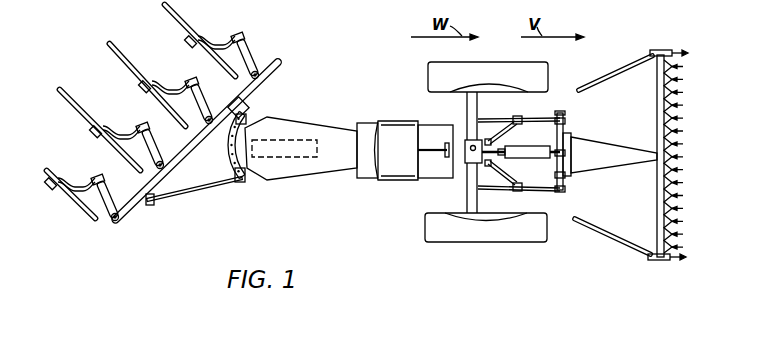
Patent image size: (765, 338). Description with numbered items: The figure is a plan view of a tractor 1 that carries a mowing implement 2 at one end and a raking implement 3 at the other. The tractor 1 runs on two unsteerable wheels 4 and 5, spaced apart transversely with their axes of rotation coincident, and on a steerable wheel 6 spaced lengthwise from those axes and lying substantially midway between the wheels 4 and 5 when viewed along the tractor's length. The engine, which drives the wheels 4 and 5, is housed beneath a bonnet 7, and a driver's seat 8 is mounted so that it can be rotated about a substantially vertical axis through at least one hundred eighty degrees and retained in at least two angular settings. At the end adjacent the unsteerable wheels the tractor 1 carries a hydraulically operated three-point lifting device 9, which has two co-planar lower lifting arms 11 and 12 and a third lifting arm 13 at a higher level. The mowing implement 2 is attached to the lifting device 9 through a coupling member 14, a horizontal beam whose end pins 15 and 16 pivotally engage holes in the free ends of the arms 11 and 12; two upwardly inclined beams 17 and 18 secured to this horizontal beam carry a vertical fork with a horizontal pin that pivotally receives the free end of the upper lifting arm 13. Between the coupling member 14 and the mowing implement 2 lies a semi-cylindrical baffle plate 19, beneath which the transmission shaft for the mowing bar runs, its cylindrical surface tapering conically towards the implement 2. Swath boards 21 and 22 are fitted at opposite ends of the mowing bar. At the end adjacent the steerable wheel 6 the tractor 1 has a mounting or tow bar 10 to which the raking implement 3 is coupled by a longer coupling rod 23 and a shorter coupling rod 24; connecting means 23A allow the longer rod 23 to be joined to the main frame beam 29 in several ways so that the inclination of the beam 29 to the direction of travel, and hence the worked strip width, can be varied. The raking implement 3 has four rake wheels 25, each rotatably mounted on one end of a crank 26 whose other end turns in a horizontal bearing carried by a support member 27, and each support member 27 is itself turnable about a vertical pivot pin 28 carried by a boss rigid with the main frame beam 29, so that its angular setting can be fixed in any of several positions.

The tractor 1 is at (428, 180).
The mowing implement 2 is at (652, 232).
The raking implement 3 is at (139, 208).
The unsteerable wheel 4 is at (527, 240).
The unsteerable wheel 5 is at (541, 75).
The steerable wheel 6 is at (288, 137).
The bonnet 7 is at (344, 172).
The driver's seat 8 is at (404, 120).
The lifting device 9 is at (524, 149).
The mounting bar or tow bar 10 is at (233, 162).
The lower lifting arm 11 is at (531, 119).
The lower lifting arm 12 is at (550, 190).
The third lifting arm 13 is at (550, 156).
The coupling member 14 is at (553, 172).
The pin 15 is at (561, 190).
The pin 16 is at (561, 116).
The upwardly inclined beam 17 is at (566, 178).
The upwardly inclined beam 18 is at (568, 133).
The semi-cylindrical baffle plate 19 is at (627, 152).
The swath board 21 is at (626, 250).
The swath board 22 is at (615, 70).
The longer coupling rod 23 is at (218, 188).
The connecting means 23A is at (175, 198).
The shorter coupling rod 24 is at (243, 105).
The rake wheel 25 is at (181, 23).
The crank 26 is at (218, 42).
The support member 27 is at (248, 54).
The vertical pivot pin 28 is at (210, 108).
The main frame beam 29 is at (194, 148).